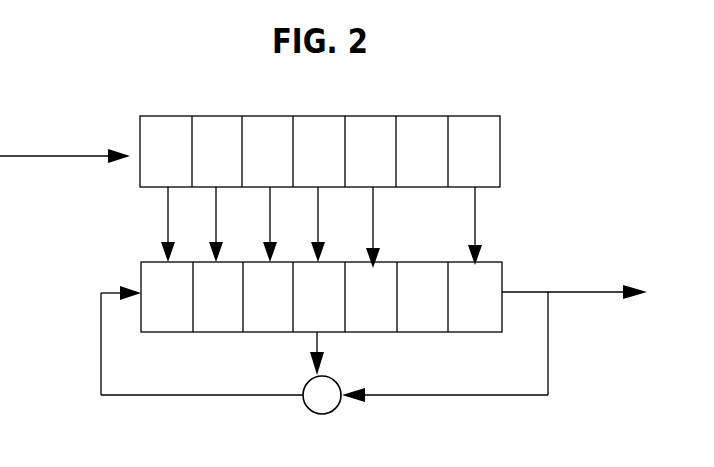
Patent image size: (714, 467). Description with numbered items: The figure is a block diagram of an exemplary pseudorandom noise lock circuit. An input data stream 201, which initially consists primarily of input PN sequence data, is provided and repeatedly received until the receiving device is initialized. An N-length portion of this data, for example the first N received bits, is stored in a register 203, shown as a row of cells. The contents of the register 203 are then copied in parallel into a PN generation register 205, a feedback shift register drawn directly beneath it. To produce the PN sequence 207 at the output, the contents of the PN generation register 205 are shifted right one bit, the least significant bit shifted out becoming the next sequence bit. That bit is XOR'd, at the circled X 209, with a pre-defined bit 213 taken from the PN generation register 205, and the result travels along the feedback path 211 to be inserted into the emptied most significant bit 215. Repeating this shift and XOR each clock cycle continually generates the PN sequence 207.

The input data stream 201 is at (65, 153).
The register 203 is at (338, 151).
The PN generation register 205 is at (339, 227).
The PN sequence 207 is at (574, 280).
The multiplier 209 is at (329, 409).
The feedback path 211 is at (324, 361).
The pre-defined bit 213 is at (336, 353).
The most significant bit 215 is at (292, 297).